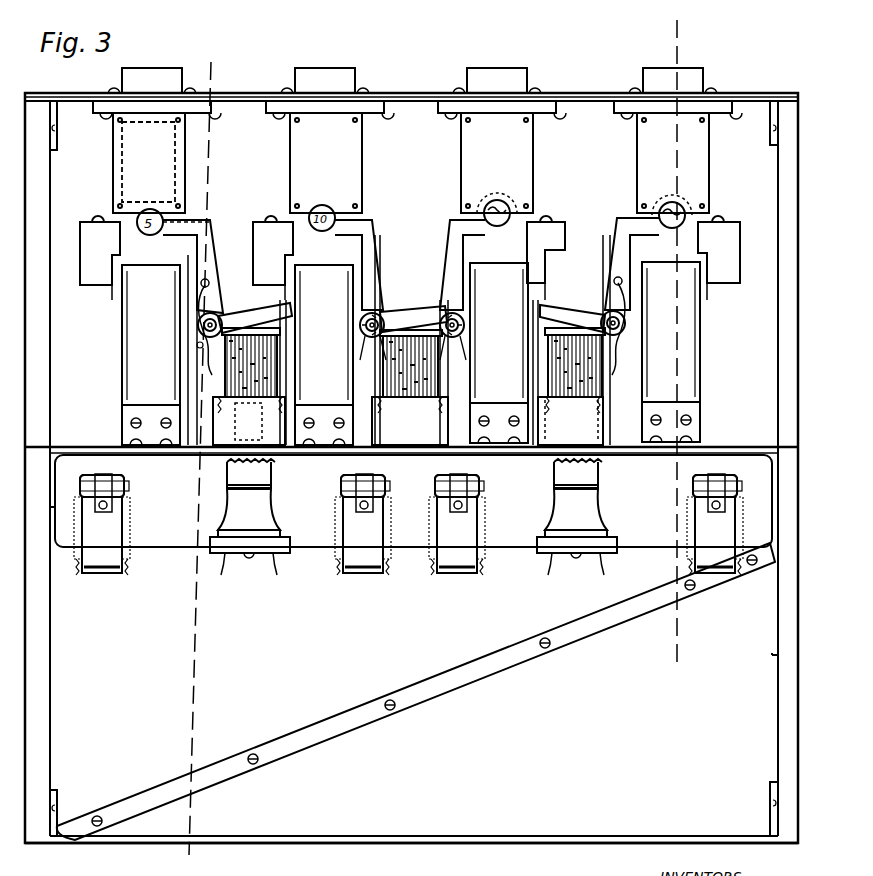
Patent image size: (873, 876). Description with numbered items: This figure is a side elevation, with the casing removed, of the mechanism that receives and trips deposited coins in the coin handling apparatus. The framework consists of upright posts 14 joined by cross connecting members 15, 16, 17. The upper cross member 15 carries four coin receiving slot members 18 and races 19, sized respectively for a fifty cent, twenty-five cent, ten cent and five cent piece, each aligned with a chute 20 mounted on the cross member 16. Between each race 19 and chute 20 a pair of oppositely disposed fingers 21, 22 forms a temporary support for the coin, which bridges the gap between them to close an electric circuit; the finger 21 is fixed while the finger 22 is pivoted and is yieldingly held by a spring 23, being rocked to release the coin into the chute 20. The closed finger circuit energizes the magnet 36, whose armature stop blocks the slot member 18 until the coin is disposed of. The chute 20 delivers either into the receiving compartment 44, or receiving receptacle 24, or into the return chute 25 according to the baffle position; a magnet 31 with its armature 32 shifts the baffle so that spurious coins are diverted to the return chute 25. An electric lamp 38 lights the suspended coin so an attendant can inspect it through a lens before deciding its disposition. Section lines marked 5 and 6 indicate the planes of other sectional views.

The upright posts 14 is at (50, 396).
The upper cross member 15 is at (410, 96).
The cross member 16 is at (548, 455).
The cross connecting member 17 is at (430, 836).
The coin receiving slot member 18 is at (417, 93).
The race 19 is at (112, 158).
The chute 20 is at (135, 338).
The fixed finger 21 is at (110, 222).
The pivoted finger 22 is at (210, 242).
The spring 23 is at (220, 306).
The receiving receptacle 24 is at (226, 396).
The return chute 25 is at (304, 712).
The magnet 31 is at (132, 520).
The armature 32 is at (104, 478).
The magnet 36 is at (176, 160).
The electric lamp 38 is at (596, 462).
The receiving compartment 44 is at (601, 677).
The section line 5- 5 is at (168, 57).
The section line 6- 6 is at (630, 43).